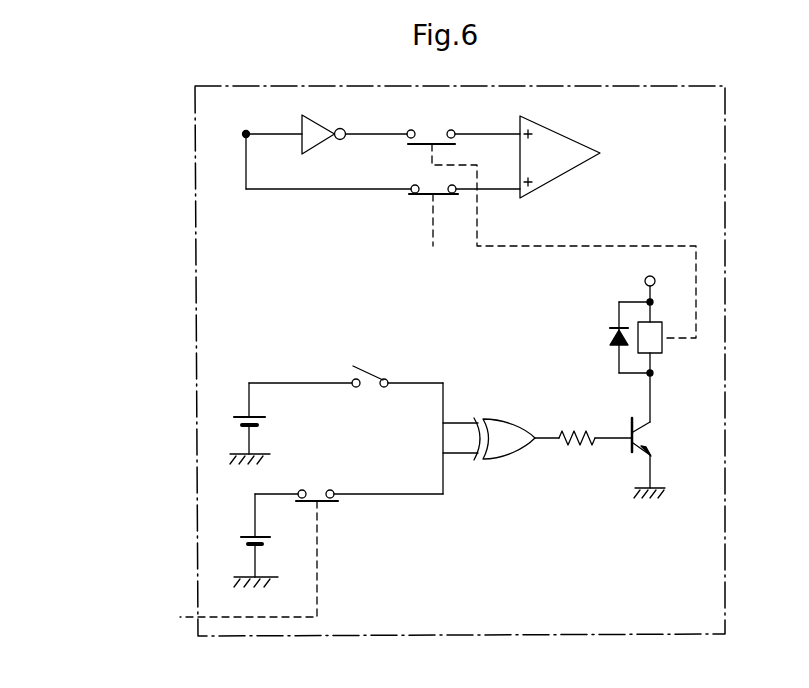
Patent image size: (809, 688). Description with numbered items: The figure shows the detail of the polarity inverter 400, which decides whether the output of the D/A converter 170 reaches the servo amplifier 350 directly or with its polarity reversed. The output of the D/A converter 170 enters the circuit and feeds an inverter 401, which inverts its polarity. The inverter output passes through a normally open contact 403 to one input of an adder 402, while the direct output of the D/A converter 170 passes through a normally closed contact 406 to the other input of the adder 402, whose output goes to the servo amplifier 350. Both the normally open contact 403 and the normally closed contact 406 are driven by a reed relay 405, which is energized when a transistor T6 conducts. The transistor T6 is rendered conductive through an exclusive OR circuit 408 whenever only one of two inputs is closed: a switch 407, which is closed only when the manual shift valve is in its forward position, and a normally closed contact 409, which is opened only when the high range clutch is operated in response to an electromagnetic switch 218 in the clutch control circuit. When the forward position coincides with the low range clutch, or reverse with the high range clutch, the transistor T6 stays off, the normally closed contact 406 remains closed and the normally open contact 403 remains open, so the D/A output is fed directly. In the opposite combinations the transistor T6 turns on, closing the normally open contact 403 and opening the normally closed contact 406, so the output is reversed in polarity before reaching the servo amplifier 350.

The polarity inverter 400 is at (727, 566).
The inverter 401 is at (320, 124).
The adder 402 is at (566, 132).
The normally open contact 403 is at (433, 131).
The reed relay 405 is at (663, 347).
The normally closed contact 406 is at (426, 196).
The switch 407 is at (412, 382).
The exclusive OR circuit 408 is at (522, 420).
The normally closed contact 409 is at (326, 504).
The transistor T6 is at (648, 439).
The D/A converter 170 is at (246, 134).
The servo amplifier 350 is at (600, 153).
The electromagnetic switch 218 is at (232, 564).